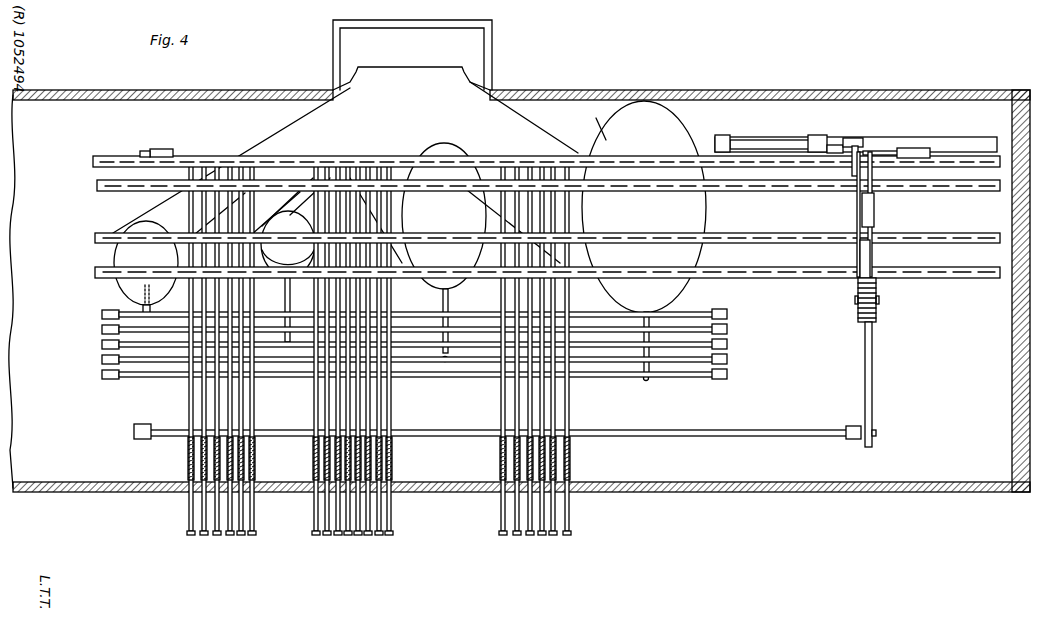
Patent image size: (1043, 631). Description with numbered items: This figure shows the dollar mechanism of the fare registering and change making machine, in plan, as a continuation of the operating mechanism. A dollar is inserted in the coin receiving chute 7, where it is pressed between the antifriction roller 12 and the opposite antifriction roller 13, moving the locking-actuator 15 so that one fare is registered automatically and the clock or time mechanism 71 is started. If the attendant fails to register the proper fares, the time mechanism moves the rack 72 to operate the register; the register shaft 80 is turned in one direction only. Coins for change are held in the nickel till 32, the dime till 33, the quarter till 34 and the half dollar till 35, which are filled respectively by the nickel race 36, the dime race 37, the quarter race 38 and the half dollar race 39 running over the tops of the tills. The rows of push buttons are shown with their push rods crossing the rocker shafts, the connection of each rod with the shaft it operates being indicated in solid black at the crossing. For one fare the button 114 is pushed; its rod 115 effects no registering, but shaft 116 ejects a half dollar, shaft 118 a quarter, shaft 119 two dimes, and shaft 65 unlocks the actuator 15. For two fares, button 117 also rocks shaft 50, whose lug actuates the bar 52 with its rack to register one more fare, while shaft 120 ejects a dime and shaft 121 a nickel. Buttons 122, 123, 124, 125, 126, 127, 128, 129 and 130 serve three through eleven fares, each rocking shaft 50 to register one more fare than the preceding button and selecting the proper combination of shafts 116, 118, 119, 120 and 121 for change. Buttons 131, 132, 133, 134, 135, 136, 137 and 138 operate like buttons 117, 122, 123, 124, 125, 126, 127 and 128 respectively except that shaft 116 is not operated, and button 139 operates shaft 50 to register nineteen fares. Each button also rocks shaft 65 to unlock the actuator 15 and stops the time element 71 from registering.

The coin receiving chute 7 is at (782, 140).
The antifriction roller 12 is at (720, 136).
The antifriction roller 13 is at (825, 135).
The locking-actuator 15 is at (860, 140).
The nickel till 32 is at (146, 267).
The dime till 33 is at (288, 276).
The quarter till 34 is at (444, 252).
The half dollar till 35 is at (644, 241).
The nickel chute or race 36 is at (764, 279).
The dime chute or race 37 is at (106, 233).
The quarter chute or race 38 is at (97, 188).
The half dollar chute or race 39 is at (600, 122).
The rocker shaft 50 is at (498, 443).
The bar 52 is at (865, 372).
The rocker shaft 65 is at (186, 154).
The clock or time mechanism 71 is at (876, 216).
The rack 72 is at (858, 252).
The shaft 80 is at (877, 302).
The push button 114 is at (187, 537).
The rod 115 is at (186, 452).
The shaft 116 is at (124, 378).
The push button 117 is at (202, 538).
The shaft 118 is at (150, 364).
The shaft 119 is at (125, 347).
The shaft 120 is at (125, 332).
The shaft 121 is at (121, 309).
The push button 122 is at (216, 538).
The push button 123 is at (230, 538).
The push button 124 is at (241, 538).
The push button 125 is at (252, 538).
The push button 126 is at (314, 535).
The push button 127 is at (326, 538).
The push button 128 is at (338, 538).
The push button 129 is at (348, 538).
The push button 130 is at (358, 538).
The push button 131 is at (368, 538).
The push button 132 is at (380, 538).
The push button 133 is at (392, 534).
The push button 134 is at (500, 532).
The push button 135 is at (514, 536).
The push button 136 is at (529, 538).
The push button 137 is at (542, 538).
The push button 138 is at (554, 538).
The push button 139 is at (571, 534).